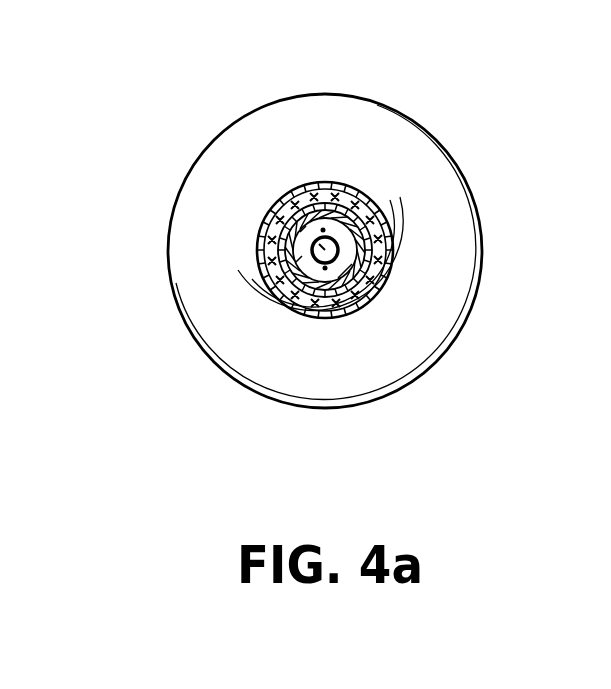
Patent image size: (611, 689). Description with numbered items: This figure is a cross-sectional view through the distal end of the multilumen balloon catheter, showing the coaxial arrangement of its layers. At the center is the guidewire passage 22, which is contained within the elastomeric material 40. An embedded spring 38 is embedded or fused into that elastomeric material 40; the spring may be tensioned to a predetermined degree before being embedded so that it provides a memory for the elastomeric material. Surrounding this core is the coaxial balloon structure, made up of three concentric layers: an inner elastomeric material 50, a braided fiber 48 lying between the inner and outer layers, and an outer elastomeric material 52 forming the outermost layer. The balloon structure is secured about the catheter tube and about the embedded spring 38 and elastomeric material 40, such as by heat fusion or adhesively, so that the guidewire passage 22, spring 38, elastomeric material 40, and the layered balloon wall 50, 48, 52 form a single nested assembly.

The guidewire passage 22 is at (283, 272).
The embedded spring 38 is at (323, 229).
The elastomeric material 40 is at (281, 211).
The braided fiber 48 is at (385, 252).
The inner elastomeric material 50 is at (328, 268).
The outer elastomeric material 52 is at (420, 125).